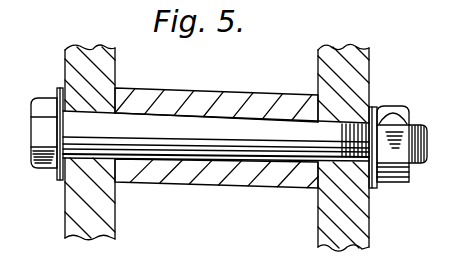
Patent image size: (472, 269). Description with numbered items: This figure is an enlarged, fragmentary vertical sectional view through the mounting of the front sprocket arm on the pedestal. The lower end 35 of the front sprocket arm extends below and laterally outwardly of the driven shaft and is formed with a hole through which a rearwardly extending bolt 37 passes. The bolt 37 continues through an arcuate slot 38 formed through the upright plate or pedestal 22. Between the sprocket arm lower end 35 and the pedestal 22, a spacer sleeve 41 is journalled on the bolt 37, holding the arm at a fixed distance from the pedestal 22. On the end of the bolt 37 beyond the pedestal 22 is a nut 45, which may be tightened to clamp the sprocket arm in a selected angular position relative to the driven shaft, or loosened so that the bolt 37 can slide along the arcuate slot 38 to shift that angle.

The upright plate or pedestal 22 is at (360, 68).
The lower end of front sprocket arm 35 is at (76, 57).
The bolt 37 is at (78, 127).
The arcuate slot 38 is at (340, 121).
The spacer sleeve 41 is at (228, 100).
The nut 45 is at (392, 181).